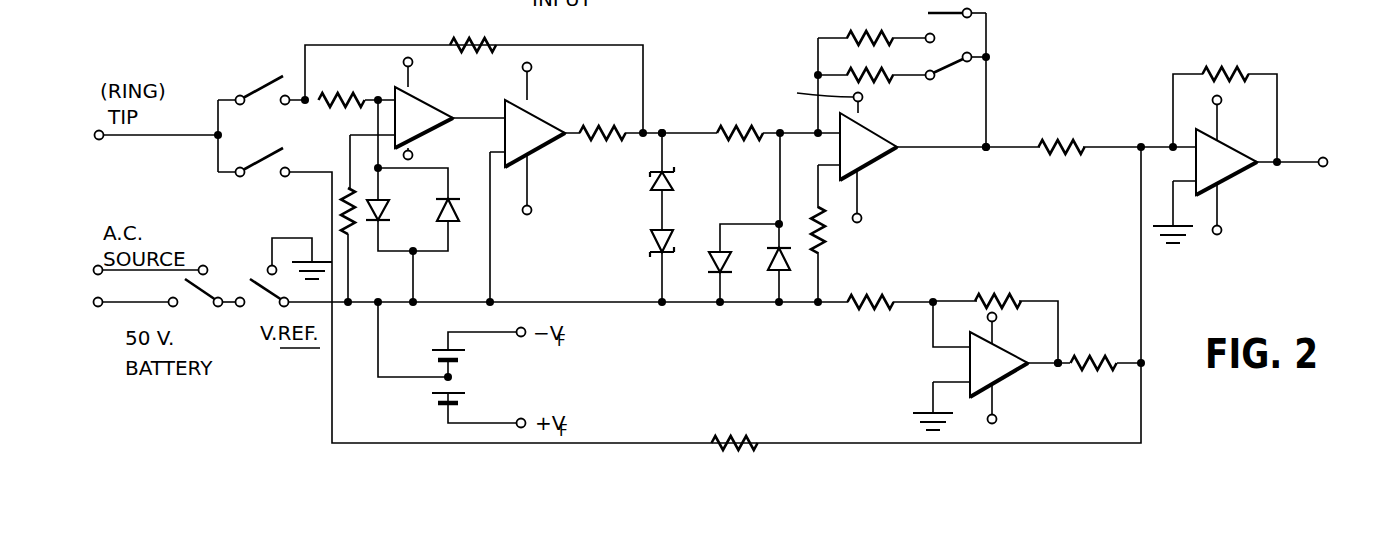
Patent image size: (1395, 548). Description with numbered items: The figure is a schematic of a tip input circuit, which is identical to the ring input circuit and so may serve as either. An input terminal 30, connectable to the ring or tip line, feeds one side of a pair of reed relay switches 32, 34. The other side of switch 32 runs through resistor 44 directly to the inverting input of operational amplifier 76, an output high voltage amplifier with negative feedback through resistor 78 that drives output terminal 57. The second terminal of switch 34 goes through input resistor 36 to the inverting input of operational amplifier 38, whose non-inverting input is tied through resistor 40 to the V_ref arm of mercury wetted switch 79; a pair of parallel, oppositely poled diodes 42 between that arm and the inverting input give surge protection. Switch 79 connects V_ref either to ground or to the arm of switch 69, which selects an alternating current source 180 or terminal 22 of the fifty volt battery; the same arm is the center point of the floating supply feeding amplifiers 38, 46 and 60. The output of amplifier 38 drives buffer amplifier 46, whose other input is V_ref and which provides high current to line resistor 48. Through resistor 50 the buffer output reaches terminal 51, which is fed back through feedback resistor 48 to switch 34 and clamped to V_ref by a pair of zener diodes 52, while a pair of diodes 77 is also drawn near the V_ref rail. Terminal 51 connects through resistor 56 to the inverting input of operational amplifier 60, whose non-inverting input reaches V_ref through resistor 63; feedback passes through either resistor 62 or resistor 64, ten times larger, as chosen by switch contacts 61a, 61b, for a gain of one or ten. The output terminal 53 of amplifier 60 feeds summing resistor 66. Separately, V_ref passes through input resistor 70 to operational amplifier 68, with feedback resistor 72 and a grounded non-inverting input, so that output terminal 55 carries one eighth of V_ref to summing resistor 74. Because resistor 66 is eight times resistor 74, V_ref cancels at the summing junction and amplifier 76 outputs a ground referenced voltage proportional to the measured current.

The terminal of the 50 volt battery 22 is at (160, 306).
The input terminal 30 is at (101, 140).
The switch 32 is at (258, 163).
The switch 34 is at (258, 85).
The input resistor 36 is at (368, 95).
The operational amplifier 38 is at (408, 112).
The resistor 40 is at (345, 207).
The diodes 42 is at (413, 215).
The resistor 44 is at (740, 440).
The amplifier 46 is at (548, 158).
The feedback resistor 48 is at (472, 53).
The resistor 50 is at (612, 125).
The output terminal 51 is at (662, 126).
The zener diodes 52 is at (669, 193).
The output terminal 53 is at (990, 142).
The output terminal 55 is at (1060, 370).
The resistor 56 is at (748, 125).
The output terminal 57 is at (1328, 150).
The operational amplifier 60 is at (884, 153).
The switch 61a is at (947, 62).
The switch 61b is at (952, 18).
The resistor 62 is at (880, 77).
The resistor 63 is at (810, 222).
The resistor 64 is at (851, 36).
The summing resistor 66 is at (1082, 140).
The operational amplifier 68 is at (1003, 378).
The switch 69 is at (207, 290).
The input resistor 70 is at (880, 296).
The feedback resistor 72 is at (1000, 293).
The summing resistor 74 is at (1094, 355).
The operational amplifier 76 is at (1232, 180).
The diodes 77 is at (775, 273).
The resistor 78 is at (1228, 65).
The switch 79 is at (267, 292).
The alternating current source 180 is at (195, 263).